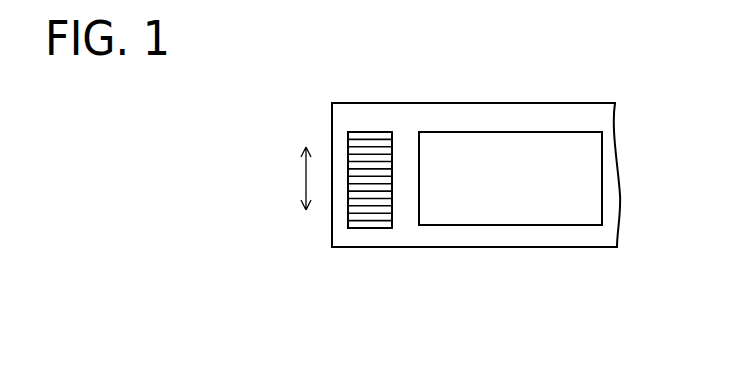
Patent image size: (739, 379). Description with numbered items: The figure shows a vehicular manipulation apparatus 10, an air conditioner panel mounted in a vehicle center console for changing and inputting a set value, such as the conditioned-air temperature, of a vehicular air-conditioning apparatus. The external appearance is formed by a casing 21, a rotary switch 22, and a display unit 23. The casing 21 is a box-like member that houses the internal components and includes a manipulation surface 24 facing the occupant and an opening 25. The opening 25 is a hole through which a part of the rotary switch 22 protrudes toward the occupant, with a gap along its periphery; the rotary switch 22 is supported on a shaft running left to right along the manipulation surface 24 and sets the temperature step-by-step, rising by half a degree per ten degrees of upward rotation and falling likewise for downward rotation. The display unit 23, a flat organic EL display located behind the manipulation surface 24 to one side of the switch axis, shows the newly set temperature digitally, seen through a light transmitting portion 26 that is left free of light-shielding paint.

The vehicular manipulation apparatus 10 is at (608, 83).
The casing 21 is at (482, 258).
The rotary switch 22 is at (370, 212).
The display unit 23 is at (593, 203).
The manipulation surface 24 is at (557, 238).
The opening 25 is at (352, 160).
The light transmitting portion 26 is at (429, 140).